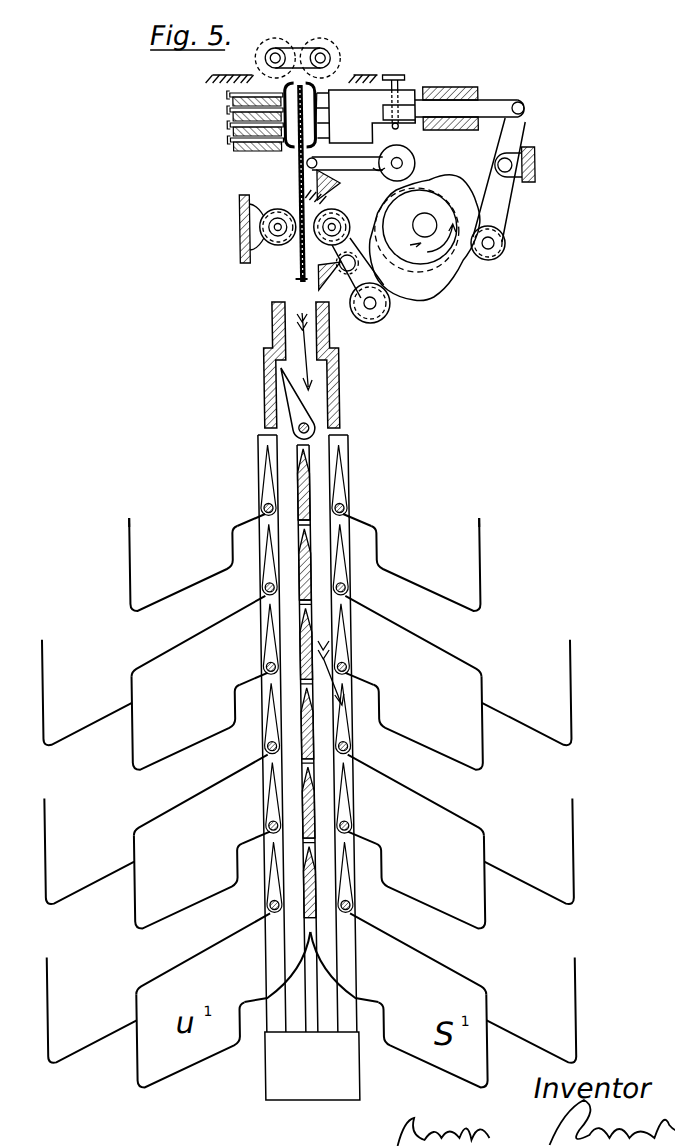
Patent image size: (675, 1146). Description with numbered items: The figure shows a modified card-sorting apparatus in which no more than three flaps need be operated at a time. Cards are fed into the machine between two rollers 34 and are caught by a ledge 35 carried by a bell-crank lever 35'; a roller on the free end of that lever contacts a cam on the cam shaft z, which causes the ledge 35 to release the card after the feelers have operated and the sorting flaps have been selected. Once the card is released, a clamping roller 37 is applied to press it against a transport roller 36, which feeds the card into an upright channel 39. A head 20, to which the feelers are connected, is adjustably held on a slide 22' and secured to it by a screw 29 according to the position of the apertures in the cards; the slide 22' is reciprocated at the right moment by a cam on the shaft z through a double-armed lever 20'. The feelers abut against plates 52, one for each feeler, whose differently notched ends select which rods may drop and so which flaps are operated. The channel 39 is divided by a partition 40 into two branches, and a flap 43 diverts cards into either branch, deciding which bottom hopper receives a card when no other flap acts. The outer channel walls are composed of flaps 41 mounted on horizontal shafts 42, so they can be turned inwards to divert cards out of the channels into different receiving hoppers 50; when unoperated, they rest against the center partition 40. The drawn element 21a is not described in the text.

The rollers 34 is at (280, 44).
The guide steps a, b, c, d 21a is at (326, 138).
The head 20 is at (375, 85).
The screw 29 is at (406, 75).
The slide 22' is at (473, 91).
The plates 52 is at (236, 93).
The ledge 35 is at (263, 203).
The bell-crank lever 35' is at (374, 172).
The double-armed lever 20' is at (513, 189).
The transport roller 36 is at (276, 222).
The clamping roller 37 is at (347, 218).
The upright channel 39 is at (318, 388).
The flap 43 is at (300, 407).
The partition 40 is at (312, 478).
The flaps 41 is at (338, 494).
The horizontal shafts 42 is at (344, 587).
The receiving hoppers 50 is at (130, 607).
The cam shaft z is at (431, 228).